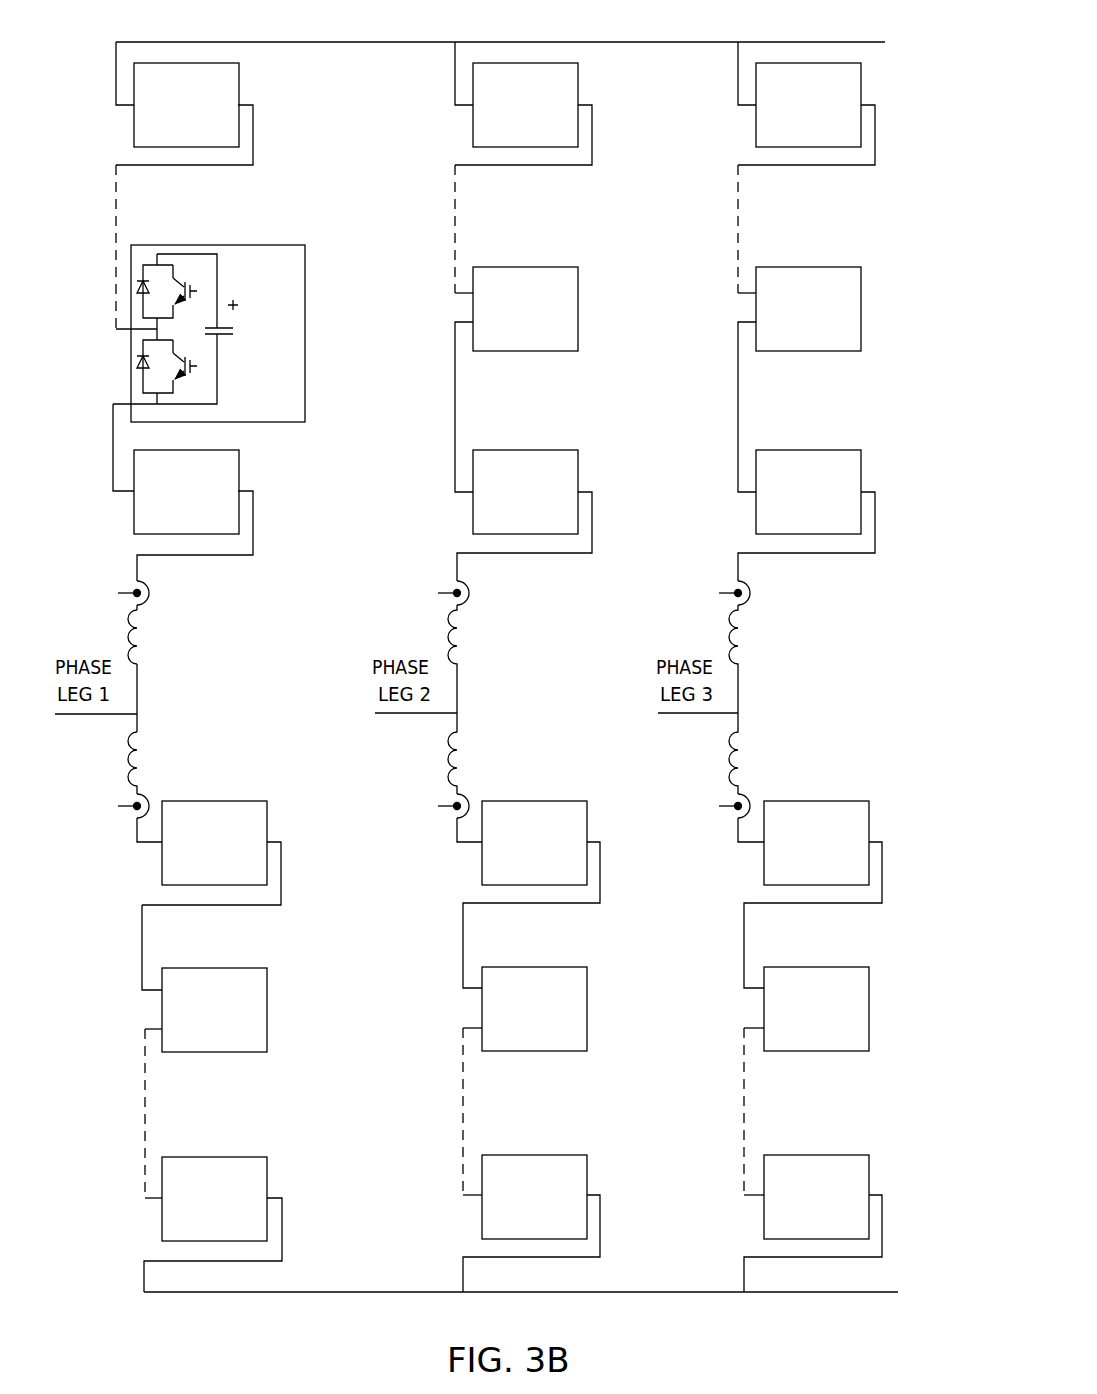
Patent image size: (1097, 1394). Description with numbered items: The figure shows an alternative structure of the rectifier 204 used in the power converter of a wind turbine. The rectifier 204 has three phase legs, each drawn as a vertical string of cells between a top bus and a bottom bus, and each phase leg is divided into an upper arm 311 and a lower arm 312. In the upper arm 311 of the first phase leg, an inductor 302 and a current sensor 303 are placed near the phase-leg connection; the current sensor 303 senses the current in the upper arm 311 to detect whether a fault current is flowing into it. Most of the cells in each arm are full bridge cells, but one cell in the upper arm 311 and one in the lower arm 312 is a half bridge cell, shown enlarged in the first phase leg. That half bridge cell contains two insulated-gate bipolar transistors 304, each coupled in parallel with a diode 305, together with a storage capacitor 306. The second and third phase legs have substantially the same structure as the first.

The rectifier 204 is at (885, 82).
The inductor 302 is at (154, 639).
The current sensor 303 is at (159, 592).
The insulated-gate bipolar transistor 304 is at (200, 370).
The diode 305 is at (136, 374).
The storage capacitor 306 is at (240, 332).
The upper arm 311 is at (105, 463).
The lower arm 312 is at (121, 1020).